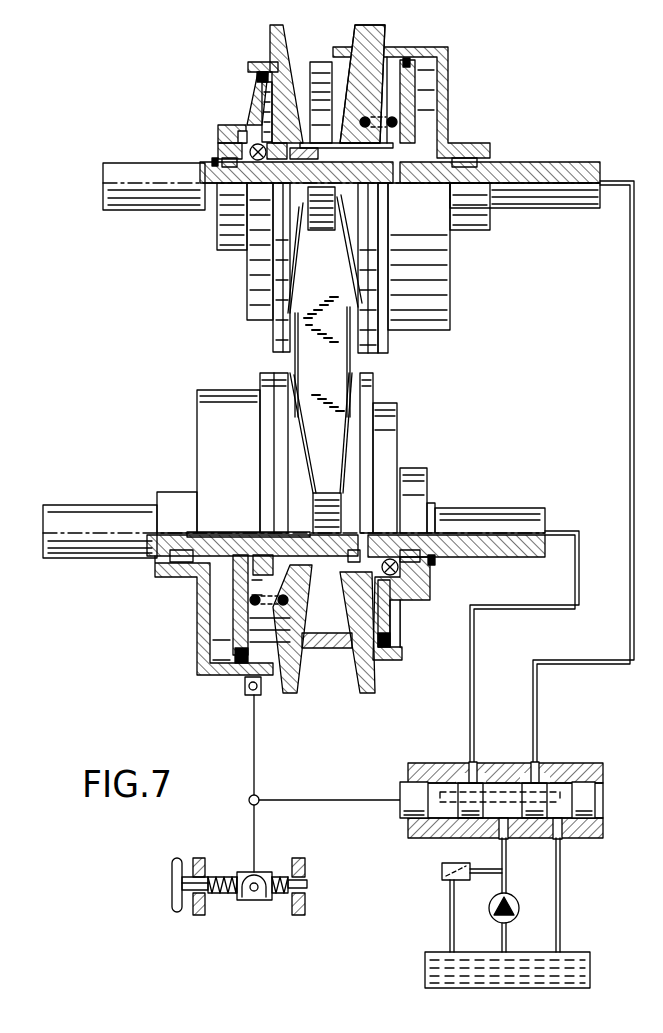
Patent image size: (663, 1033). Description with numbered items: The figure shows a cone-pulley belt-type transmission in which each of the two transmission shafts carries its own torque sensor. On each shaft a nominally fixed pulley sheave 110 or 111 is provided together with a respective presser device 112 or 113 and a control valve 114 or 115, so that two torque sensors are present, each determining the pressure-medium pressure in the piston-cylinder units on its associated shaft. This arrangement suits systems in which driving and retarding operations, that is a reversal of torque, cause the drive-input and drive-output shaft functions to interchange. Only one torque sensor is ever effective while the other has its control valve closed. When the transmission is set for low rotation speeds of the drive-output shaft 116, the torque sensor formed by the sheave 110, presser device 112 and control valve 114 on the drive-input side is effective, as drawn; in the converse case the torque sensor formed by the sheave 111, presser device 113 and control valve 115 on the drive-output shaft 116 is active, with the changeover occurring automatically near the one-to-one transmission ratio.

The nominally fixed pulley sheave 110 is at (372, 377).
The nominally fixed pulley sheave 111 is at (272, 38).
The presser device 112 is at (430, 585).
The presser device 113 is at (220, 150).
The control valve 114 is at (368, 560).
The control valve 115 is at (268, 138).
The drive-output shaft 116 is at (577, 200).